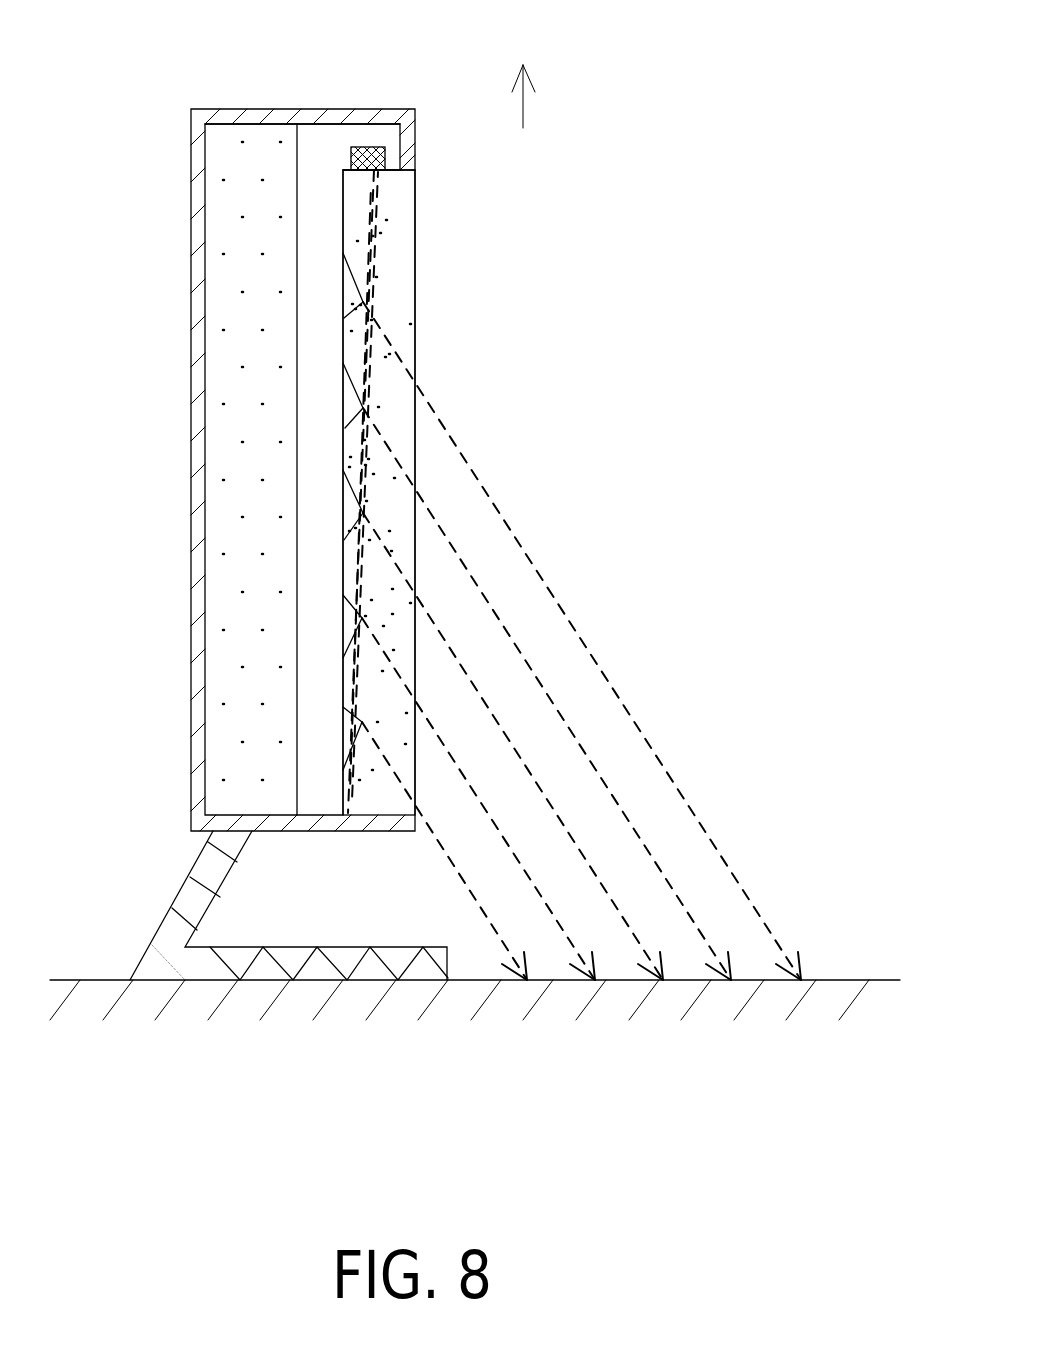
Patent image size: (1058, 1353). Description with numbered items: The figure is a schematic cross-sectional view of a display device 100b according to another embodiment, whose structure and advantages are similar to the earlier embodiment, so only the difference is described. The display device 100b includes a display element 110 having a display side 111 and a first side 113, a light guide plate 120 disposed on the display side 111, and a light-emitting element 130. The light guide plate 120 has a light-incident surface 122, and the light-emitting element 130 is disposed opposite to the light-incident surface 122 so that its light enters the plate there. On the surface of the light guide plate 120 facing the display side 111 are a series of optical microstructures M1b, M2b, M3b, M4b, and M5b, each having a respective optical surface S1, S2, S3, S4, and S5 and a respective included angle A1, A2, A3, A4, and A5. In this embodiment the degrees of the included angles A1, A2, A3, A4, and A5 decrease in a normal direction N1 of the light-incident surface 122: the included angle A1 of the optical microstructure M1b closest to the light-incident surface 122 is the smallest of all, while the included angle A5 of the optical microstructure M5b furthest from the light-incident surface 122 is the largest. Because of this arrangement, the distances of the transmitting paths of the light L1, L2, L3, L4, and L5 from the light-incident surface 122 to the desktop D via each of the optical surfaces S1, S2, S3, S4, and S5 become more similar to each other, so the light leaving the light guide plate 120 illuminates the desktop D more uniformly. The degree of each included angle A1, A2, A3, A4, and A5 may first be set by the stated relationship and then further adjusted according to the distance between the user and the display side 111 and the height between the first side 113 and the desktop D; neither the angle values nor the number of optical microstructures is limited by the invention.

The display device 100b is at (148, 32).
The display element 110 is at (245, 205).
The display side 111 is at (308, 189).
The first side 113 is at (247, 136).
The light guide plate 120 is at (383, 258).
The light-incident surface 122 is at (404, 176).
The light-emitting element 130 is at (378, 132).
The normal direction N1 is at (523, 108).
The optical microstructure M1b is at (131, 213).
The optical microstructure M2b is at (140, 343).
The optical microstructure M3b is at (133, 455).
The optical microstructure M4b is at (140, 570).
The optical microstructure M5b is at (143, 680).
The optical surface S1 is at (352, 262).
The optical surface S2 is at (352, 390).
The optical surface S3 is at (352, 498).
The optical surface S4 is at (352, 612).
The optical surface S5 is at (352, 722).
The included angle A1 is at (345, 280).
The included angle A2 is at (345, 394).
The included angle A3 is at (345, 506).
The included angle A4 is at (345, 619).
The included angle A5 is at (345, 730).
The light L1 is at (765, 912).
The light L2 is at (697, 912).
The light L3 is at (628, 912).
The light L4 is at (560, 912).
The light L5 is at (492, 912).
The desktop D is at (856, 966).